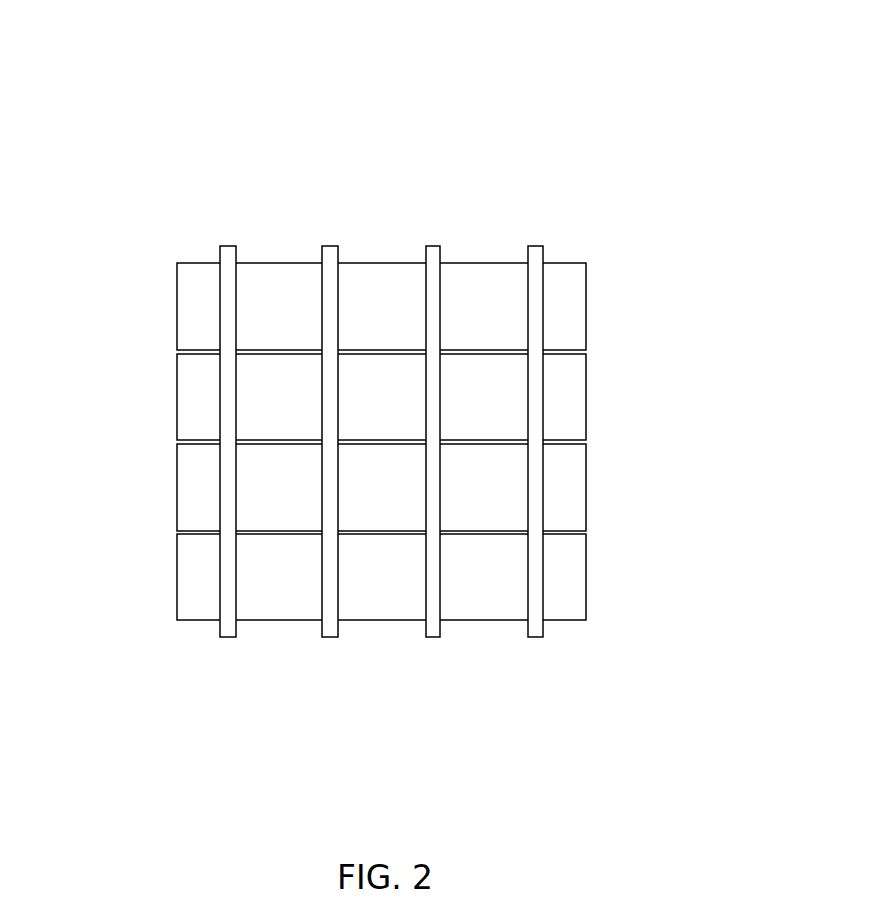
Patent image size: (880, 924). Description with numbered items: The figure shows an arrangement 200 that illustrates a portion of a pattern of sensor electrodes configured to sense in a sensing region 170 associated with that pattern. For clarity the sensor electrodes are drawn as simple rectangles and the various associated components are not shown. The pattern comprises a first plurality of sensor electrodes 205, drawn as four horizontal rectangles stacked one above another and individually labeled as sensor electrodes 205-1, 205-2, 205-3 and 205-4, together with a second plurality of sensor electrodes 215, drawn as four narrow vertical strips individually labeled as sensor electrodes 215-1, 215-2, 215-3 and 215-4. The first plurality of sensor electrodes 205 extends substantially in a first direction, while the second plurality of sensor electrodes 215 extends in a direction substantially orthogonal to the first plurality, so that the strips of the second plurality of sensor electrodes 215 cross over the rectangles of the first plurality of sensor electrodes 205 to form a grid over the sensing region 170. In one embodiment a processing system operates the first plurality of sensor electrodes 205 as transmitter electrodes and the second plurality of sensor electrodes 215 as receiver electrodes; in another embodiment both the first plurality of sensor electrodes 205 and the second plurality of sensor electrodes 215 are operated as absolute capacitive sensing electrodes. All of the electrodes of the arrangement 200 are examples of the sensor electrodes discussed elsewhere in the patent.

The arrangement 200 is at (608, 75).
The sensing region 170 is at (556, 153).
The first plurality of sensor electrodes 205 is at (150, 250).
The sensor electrode 205-1 is at (568, 302).
The sensor electrode 205-2 is at (568, 385).
The sensor electrode 205-3 is at (568, 478).
The sensor electrode 205-4 is at (568, 567).
The second plurality of sensor electrodes 215 is at (560, 235).
The sensor electrode 215-1 is at (228, 637).
The sensor electrode 215-2 is at (330, 637).
The sensor electrode 215-3 is at (433, 637).
The sensor electrode 215-4 is at (535, 637).